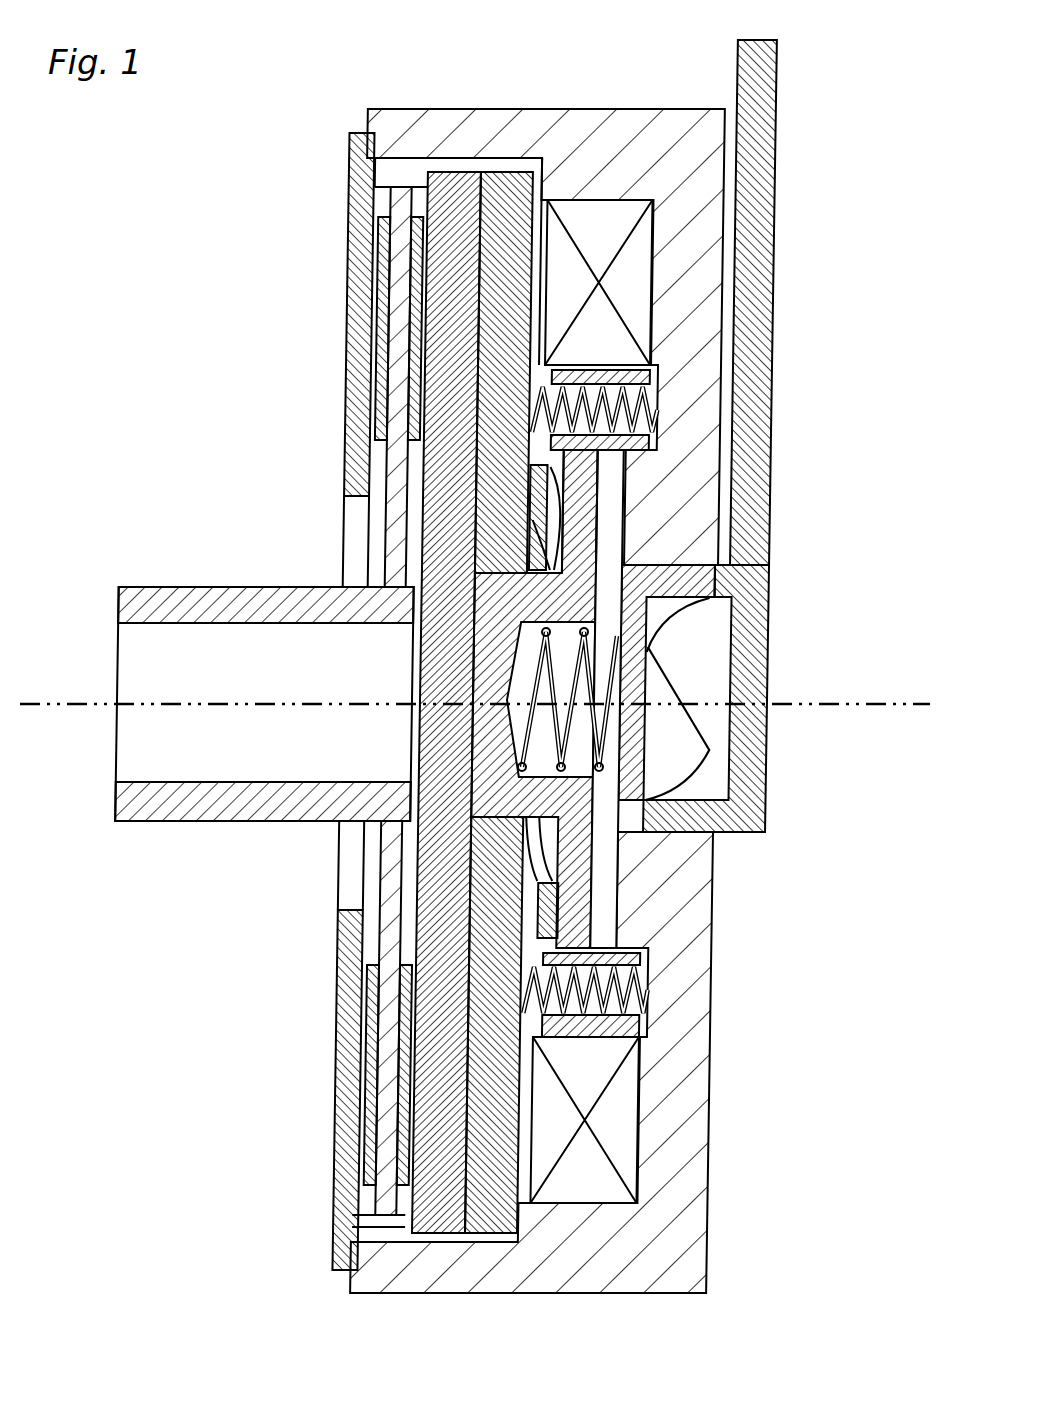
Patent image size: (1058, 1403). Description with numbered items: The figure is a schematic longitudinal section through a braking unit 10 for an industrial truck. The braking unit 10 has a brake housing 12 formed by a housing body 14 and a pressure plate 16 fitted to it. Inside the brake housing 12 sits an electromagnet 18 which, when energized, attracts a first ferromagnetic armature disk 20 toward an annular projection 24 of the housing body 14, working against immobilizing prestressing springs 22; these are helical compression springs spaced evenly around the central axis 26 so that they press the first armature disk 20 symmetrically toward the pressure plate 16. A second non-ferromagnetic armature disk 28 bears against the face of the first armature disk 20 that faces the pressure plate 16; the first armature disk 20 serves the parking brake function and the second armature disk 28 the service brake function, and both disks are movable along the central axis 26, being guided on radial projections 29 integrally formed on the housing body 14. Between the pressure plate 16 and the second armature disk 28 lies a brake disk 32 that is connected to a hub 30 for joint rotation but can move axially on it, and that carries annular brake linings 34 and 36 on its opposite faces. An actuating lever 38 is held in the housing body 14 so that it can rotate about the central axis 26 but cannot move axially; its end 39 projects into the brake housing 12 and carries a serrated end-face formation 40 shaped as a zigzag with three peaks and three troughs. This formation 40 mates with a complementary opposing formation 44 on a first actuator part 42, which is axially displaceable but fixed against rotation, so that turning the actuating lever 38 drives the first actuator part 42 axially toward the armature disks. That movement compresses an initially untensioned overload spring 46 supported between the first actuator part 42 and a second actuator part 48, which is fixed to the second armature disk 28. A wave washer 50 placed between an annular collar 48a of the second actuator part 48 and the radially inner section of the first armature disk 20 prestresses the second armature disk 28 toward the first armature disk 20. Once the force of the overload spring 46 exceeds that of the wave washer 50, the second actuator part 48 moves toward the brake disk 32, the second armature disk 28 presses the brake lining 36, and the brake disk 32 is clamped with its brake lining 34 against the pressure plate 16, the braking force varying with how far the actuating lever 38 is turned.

The braking unit 10 is at (152, 171).
The brake housing 12 is at (245, 280).
The housing body 14 is at (578, 130).
The pressure plate 16 is at (352, 158).
The electromagnet 18 is at (605, 220).
The first ferromagnetic armature disk 20 is at (505, 195).
The immobilizing prestressing springs 22 is at (645, 398).
The annular projection 24 is at (545, 190).
The central axis 26 is at (822, 690).
The second non-ferromagnetic armature disk 28 is at (455, 195).
The radial projections 29 is at (395, 180).
The hub 30 is at (183, 590).
The brake disk 32 is at (390, 870).
The brake lining 34 is at (370, 1085).
The brake lining 36 is at (405, 1165).
The actuating lever 38 is at (766, 345).
The end of actuating lever 39 is at (783, 768).
The serrated end-face formation 40 is at (697, 733).
The first actuator part 42 is at (700, 580).
The opposing formation 44 is at (670, 684).
The overload spring 46 is at (602, 640).
The second actuator part 48 is at (577, 848).
The annular collar 48a is at (583, 487).
The wave washer 50 is at (540, 908).